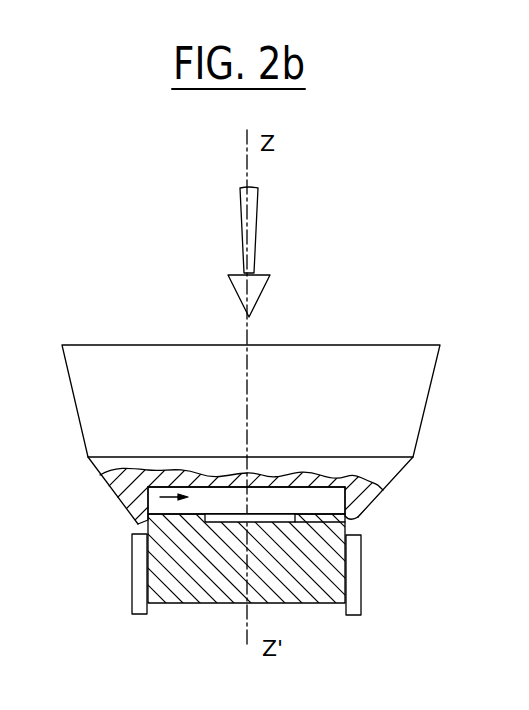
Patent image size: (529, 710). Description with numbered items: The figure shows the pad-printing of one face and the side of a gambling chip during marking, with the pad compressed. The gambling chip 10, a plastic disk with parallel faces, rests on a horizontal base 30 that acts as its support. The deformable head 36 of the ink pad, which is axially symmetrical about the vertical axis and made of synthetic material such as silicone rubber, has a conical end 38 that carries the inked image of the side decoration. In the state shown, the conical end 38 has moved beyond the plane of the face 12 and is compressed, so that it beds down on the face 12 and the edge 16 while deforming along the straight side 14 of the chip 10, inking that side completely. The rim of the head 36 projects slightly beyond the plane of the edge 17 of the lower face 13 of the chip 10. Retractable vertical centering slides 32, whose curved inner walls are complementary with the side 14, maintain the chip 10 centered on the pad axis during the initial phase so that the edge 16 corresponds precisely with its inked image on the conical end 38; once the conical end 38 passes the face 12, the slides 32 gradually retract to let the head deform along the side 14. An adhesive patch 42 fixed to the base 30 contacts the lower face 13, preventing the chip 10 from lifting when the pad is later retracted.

The deformable head 36 is at (72, 390).
The conical end 38 is at (100, 476).
The face 12 is at (280, 474).
The straight side 14 is at (358, 472).
The edge 16 is at (158, 486).
The gambling chip 10 is at (145, 518).
The edge of the lower face 17 is at (140, 523).
The horizontal base 30 is at (196, 603).
The adhesive patch 42 is at (222, 514).
The lower face 13 is at (300, 526).
The retractable vertical centering slides 32 is at (138, 582).